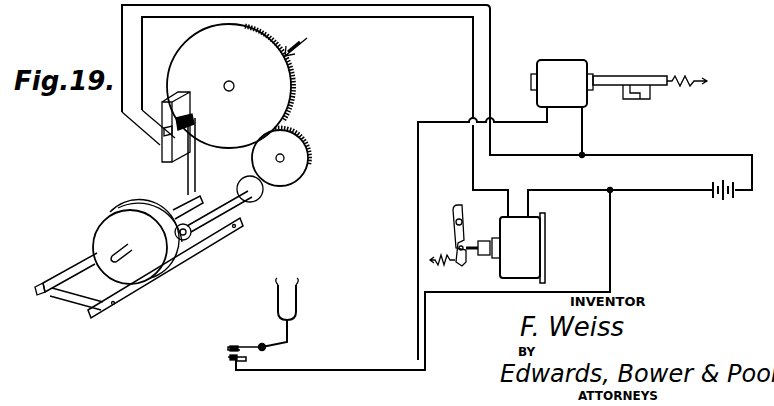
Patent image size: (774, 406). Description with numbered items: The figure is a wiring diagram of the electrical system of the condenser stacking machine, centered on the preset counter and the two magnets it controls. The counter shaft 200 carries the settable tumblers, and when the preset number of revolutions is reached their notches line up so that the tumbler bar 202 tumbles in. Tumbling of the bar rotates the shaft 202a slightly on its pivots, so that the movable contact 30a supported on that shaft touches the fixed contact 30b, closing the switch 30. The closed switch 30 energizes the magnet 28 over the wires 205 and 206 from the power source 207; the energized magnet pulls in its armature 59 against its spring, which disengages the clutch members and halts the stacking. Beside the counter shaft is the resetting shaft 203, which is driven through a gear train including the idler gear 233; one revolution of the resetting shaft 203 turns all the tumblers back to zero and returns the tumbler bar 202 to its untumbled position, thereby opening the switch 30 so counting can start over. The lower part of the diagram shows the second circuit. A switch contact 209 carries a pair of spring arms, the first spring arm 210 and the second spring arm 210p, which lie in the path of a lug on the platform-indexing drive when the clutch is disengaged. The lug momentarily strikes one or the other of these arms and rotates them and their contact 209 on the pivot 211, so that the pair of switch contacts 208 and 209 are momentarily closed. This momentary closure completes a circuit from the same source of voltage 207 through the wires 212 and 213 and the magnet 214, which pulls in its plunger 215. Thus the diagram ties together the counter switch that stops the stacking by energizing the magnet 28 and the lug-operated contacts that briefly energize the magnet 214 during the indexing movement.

The magnet 28 is at (532, 250).
The switch 30 is at (158, 147).
The movable contact 30a is at (192, 116).
The fixed contact 30b is at (163, 130).
The armature 59 is at (456, 244).
The counter shaft 200 is at (115, 242).
The tumbler bar 202 is at (130, 297).
The shaft 202a is at (73, 266).
The resetting shaft 203 is at (236, 203).
The wire 205 is at (490, 52).
The wire 206 is at (473, 76).
The power source 207 is at (722, 205).
The switch contact 208 is at (230, 359).
The switch contact 209 is at (226, 348).
The spring arm 210 is at (277, 303).
The spring arm 210p is at (298, 302).
The pivot 211 is at (261, 344).
The wire 212 is at (610, 237).
The wire 213 is at (418, 248).
The magnet 214 is at (545, 97).
The plunger 215 is at (610, 88).
The idler gear 233 is at (312, 145).